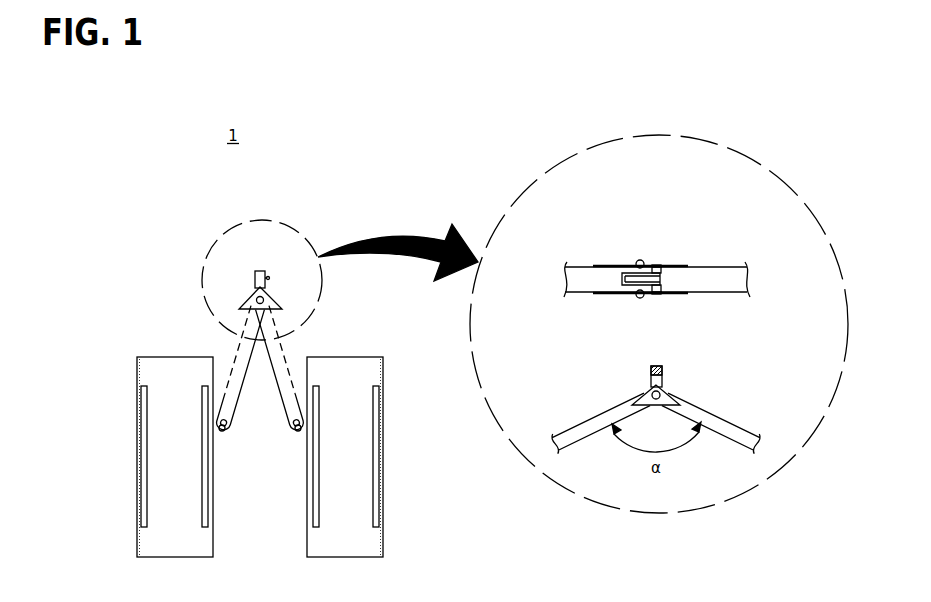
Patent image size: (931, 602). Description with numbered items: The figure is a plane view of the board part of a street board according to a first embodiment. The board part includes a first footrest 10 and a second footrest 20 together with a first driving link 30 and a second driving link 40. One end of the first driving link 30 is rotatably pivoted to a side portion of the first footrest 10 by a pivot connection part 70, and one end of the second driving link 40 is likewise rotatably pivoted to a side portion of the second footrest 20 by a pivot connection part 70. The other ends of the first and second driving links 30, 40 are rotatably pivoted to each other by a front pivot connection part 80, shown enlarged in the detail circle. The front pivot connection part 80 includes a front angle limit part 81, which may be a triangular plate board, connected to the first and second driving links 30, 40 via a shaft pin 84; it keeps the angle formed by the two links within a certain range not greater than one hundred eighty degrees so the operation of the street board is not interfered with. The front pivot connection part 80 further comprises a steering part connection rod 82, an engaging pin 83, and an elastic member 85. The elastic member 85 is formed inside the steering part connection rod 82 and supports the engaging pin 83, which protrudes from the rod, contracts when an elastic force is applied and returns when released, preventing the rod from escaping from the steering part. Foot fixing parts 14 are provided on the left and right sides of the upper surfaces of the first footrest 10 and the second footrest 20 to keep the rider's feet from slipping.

The first footrest 10 is at (142, 547).
The second footrest 20 is at (377, 547).
The foot fixing part 14 is at (205, 450).
The first driving link 30 is at (238, 357).
The second driving link 40 is at (283, 357).
The pivot connection part 70 is at (290, 437).
The front pivot connection part 80 is at (205, 262).
The front angle limit part 81 is at (658, 267).
The steering part connection rod 82 is at (655, 366).
The engaging pin 83 is at (662, 372).
The shaft pin 84 is at (640, 260).
The elastic member 85 is at (651, 371).